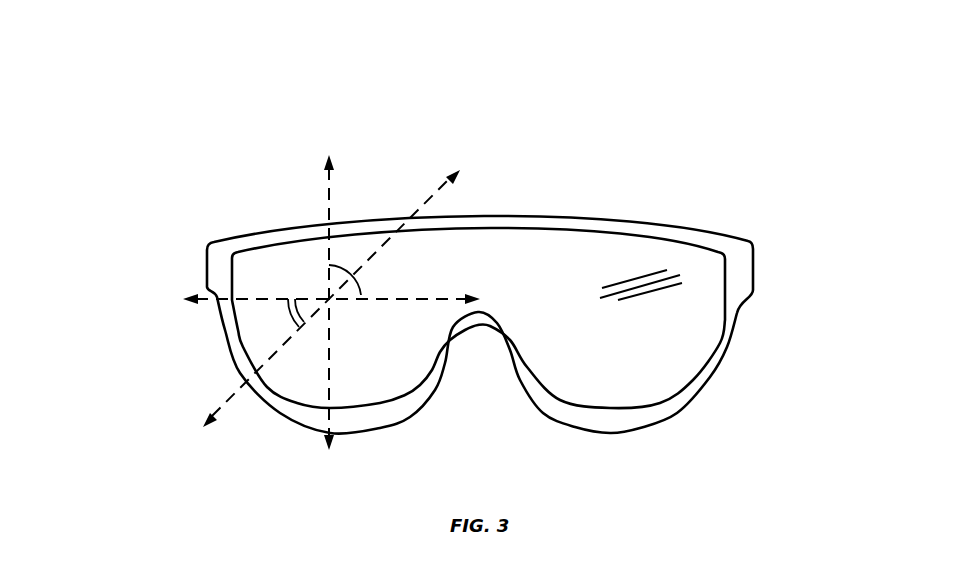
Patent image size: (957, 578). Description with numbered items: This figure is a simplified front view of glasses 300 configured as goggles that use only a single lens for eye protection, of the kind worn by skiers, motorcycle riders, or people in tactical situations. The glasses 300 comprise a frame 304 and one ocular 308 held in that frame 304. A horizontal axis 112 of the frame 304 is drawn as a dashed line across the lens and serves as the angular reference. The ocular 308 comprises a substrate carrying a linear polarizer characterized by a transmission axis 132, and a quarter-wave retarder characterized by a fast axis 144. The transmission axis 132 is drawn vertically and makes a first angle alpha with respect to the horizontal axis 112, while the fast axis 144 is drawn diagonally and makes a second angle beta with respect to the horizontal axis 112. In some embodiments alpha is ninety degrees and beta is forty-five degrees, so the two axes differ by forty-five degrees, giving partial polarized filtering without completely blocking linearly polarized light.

The glasses 300 is at (115, 128).
The frame 304 is at (220, 253).
The ocular 308 is at (673, 350).
The transmission axis 132 is at (337, 170).
The horizontal axis 112 is at (480, 299).
The fast axis 144 is at (458, 183).